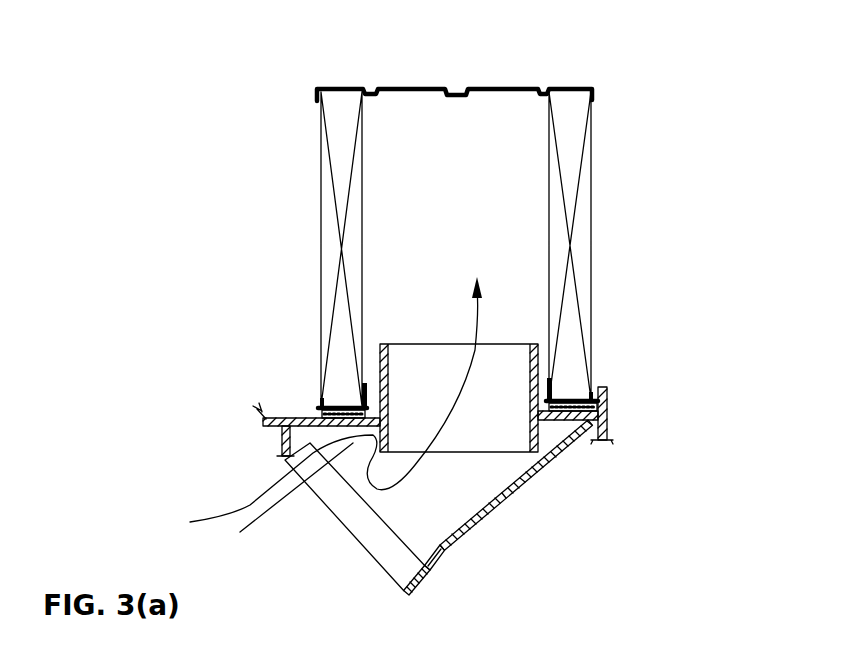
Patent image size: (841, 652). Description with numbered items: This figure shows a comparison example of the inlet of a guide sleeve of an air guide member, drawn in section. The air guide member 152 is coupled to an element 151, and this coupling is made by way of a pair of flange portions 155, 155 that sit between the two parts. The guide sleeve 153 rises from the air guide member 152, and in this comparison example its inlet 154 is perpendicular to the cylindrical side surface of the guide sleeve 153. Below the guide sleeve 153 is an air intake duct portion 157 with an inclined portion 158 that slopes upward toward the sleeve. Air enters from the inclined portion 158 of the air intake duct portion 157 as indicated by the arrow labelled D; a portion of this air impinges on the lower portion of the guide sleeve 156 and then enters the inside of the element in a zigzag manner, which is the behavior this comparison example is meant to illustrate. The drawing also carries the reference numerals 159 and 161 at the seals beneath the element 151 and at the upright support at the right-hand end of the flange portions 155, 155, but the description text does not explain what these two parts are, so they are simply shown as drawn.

The element 151 is at (602, 127).
The air guide member 152 is at (508, 455).
The guide sleeve 153 is at (533, 343).
The inlet 154 is at (465, 458).
The flange portions 155 is at (373, 412).
The lower portion of the guide sleeve 156 is at (312, 407).
The air intake duct portion 157 is at (452, 545).
The inclined portion 158 is at (358, 548).
The seal 159 is at (497, 84).
The support bar 161 is at (598, 388).